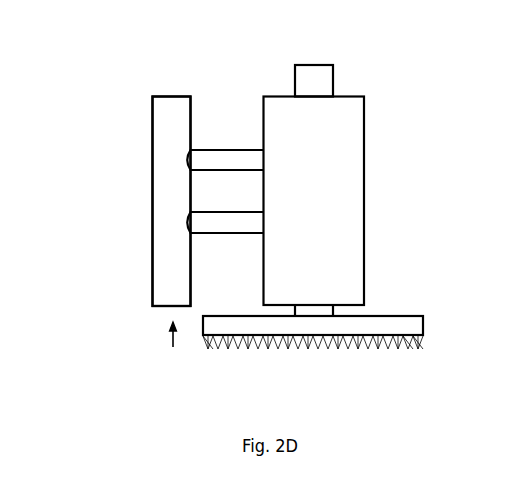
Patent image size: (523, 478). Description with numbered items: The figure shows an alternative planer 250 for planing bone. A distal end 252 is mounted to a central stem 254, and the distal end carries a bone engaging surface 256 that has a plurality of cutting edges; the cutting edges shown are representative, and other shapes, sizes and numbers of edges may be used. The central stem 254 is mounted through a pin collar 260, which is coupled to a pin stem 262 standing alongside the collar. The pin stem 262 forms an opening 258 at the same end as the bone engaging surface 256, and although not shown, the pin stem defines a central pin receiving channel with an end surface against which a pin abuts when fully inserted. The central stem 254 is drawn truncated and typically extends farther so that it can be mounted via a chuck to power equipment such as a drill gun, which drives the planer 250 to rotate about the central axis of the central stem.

The alternative planer 250 is at (97, 114).
The distal end 252 is at (247, 365).
The central stem 254 is at (294, 87).
The bone engaging surface 256 is at (390, 347).
The opening 258 is at (171, 346).
The pin collar 260 is at (295, 212).
The pin stem 262 is at (152, 234).